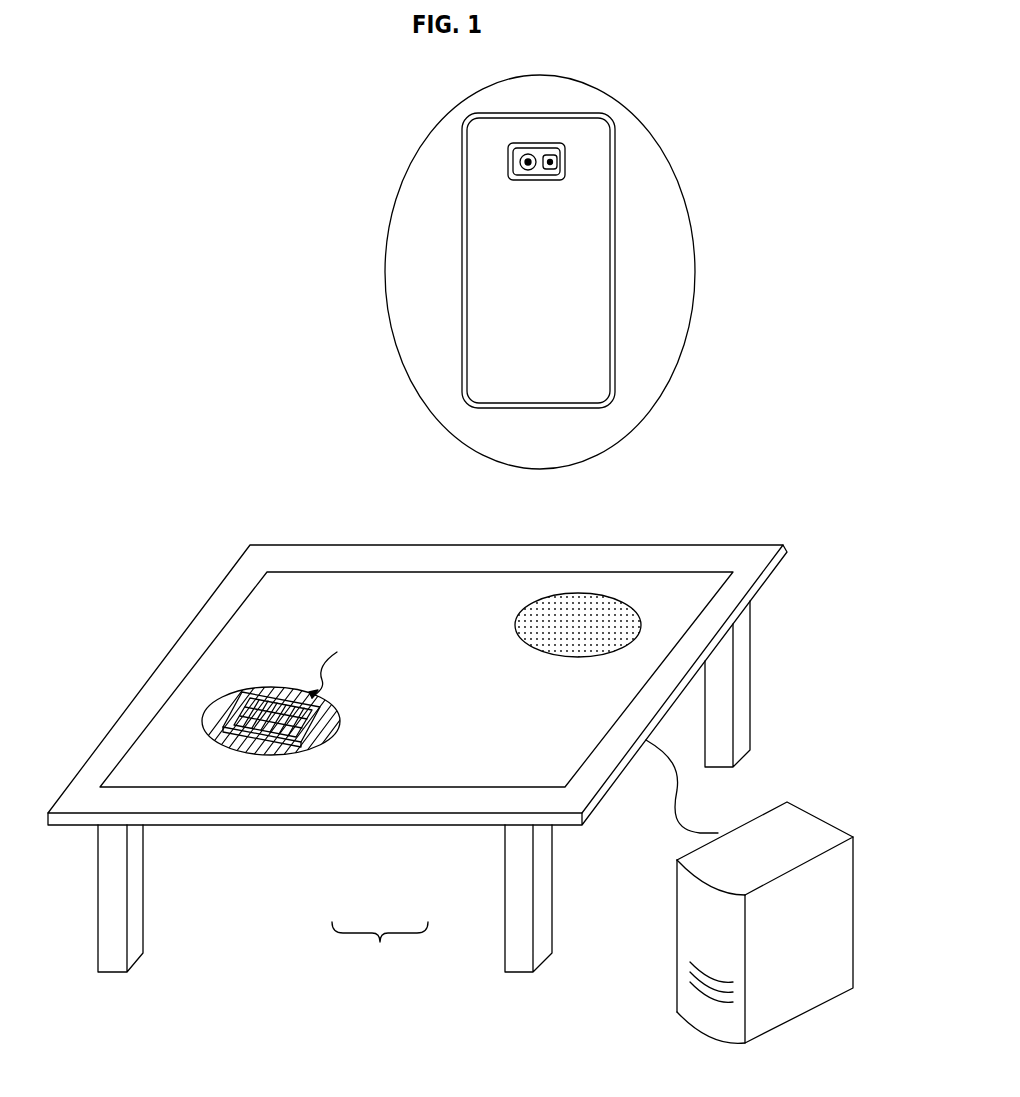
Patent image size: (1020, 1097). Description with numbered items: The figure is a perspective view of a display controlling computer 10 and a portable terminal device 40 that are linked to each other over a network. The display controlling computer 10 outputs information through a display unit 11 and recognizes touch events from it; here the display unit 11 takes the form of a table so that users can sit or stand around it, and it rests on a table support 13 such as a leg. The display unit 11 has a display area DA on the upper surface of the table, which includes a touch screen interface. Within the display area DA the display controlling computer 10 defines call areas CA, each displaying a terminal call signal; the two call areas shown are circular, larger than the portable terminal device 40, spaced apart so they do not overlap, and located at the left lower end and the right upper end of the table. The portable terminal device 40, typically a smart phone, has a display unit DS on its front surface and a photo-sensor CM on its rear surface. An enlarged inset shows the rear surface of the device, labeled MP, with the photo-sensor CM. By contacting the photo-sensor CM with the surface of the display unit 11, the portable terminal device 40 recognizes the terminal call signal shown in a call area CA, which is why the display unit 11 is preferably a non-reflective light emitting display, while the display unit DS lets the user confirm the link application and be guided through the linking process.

The display controlling computer 10 is at (785, 837).
The display unit 11 is at (417, 710).
The table support 13 is at (540, 892).
The portable terminal device 40 is at (298, 693).
The display area DA is at (365, 588).
The display unit DS is at (268, 700).
The call area CA is at (380, 950).
The mobile phone MP is at (586, 260).
The photo-sensor CM is at (543, 168).